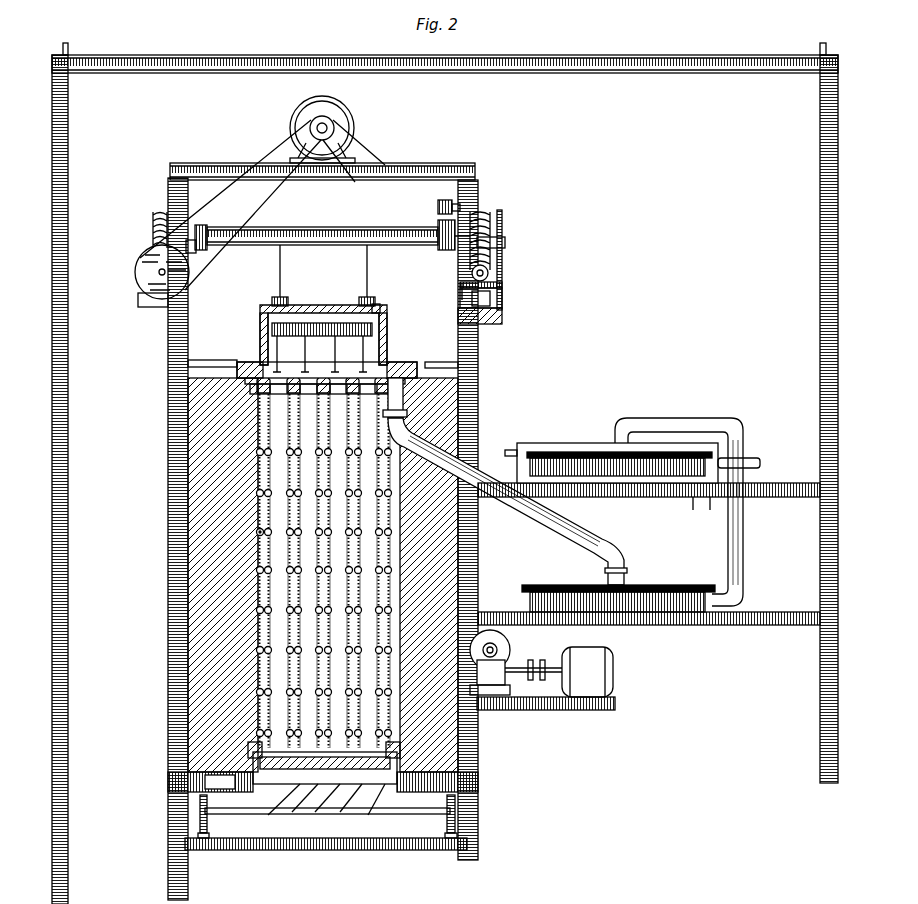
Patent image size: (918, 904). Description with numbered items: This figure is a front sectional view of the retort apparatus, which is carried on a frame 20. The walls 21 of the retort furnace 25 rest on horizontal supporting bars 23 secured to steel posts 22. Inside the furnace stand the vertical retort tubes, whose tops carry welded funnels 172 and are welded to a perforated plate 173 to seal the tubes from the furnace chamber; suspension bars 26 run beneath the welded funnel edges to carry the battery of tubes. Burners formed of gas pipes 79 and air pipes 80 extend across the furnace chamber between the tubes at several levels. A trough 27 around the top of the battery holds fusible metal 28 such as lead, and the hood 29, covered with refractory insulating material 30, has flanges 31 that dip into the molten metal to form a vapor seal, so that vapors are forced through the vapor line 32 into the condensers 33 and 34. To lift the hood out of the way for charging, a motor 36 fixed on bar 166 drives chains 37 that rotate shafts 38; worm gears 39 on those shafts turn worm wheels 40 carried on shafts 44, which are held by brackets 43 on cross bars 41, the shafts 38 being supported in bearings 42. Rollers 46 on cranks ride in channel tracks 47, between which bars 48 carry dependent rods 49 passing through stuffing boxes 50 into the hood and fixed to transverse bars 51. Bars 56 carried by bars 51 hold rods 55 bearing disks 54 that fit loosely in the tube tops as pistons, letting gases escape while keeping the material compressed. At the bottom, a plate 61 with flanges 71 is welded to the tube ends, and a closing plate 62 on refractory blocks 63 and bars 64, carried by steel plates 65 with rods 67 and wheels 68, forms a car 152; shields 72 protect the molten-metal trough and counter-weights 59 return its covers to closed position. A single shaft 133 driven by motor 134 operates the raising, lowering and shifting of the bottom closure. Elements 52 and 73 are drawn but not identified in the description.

The frame 20 is at (68, 742).
The walls 21 is at (210, 556).
The steel posts 22 is at (185, 648).
The horizontal supporting bars 23 is at (478, 785).
The retort furnace 25 is at (295, 470).
The suspension bars 26 is at (262, 374).
The trough 27 is at (420, 385).
The metal 28 is at (404, 413).
The hood 29 is at (387, 318).
The refractory and heat insulating material 30 is at (380, 308).
The flanges 31 is at (228, 364).
The vapor line 32 is at (493, 470).
The condenser 33 is at (645, 586).
The condenser 34 is at (668, 478).
The motor 36 is at (340, 111).
The chains 37 is at (275, 152).
The shafts 38 is at (160, 272).
The worm gears 39 is at (462, 284).
The worm wheels 40 is at (156, 214).
The cross bars 41 is at (502, 300).
The bearings 42 is at (502, 285).
The brackets 43 is at (505, 250).
The shafts 44 is at (502, 240).
The rollers 46 is at (200, 252).
The tracks 47 is at (206, 230).
The bars 48 is at (325, 234).
The rods 49 is at (366, 263).
The stuffing boxes 50 is at (276, 305).
The transverse members 51 is at (318, 322).
The pinion 52 is at (452, 207).
The disks 54 is at (282, 408).
The rods 55 is at (266, 345).
The bars 56 is at (387, 340).
The counter-weights 59 is at (220, 783).
The plate 61 is at (462, 736).
The closing plate 62 is at (291, 810).
The blocks of refractory material 63 is at (338, 810).
The bars 64 is at (315, 810).
The steel plates 65 is at (372, 810).
The rods 67 is at (405, 810).
The wheels 68 is at (458, 810).
The flanges 71 is at (397, 763).
The shields 72 is at (300, 778).
The hanger 73 is at (207, 835).
The gas pipes 79 is at (258, 527).
The air pipes 80 is at (257, 505).
The shaft 133 is at (495, 650).
The motor 134 is at (612, 682).
The car 152 is at (266, 816).
The bar 166 is at (430, 164).
The funnels 172 is at (283, 375).
The perforated plate 173 is at (275, 397).